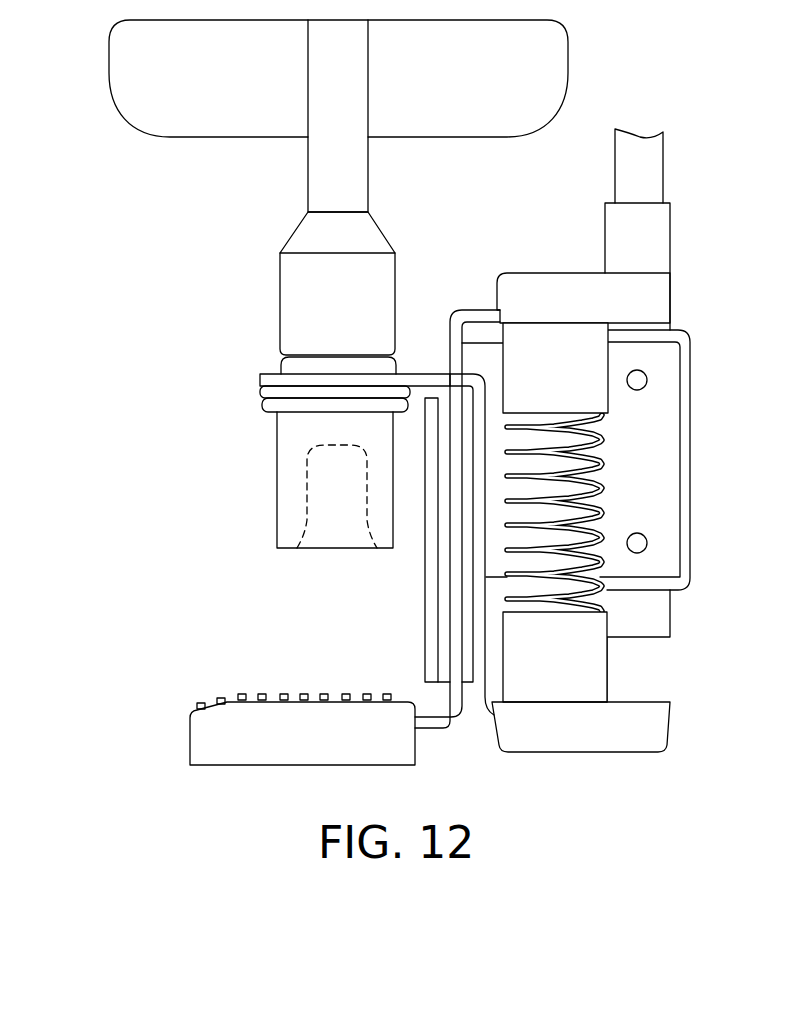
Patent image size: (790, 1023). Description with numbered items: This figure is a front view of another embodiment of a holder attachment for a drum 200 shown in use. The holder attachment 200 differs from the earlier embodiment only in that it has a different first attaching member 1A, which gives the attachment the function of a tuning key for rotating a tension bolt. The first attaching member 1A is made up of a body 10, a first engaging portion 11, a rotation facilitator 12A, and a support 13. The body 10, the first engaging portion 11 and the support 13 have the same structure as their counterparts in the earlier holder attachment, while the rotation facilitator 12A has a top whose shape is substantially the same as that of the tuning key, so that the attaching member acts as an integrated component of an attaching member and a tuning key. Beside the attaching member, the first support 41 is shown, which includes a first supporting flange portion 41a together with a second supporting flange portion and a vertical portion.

The first attaching member 1A is at (112, 177).
The rotation facilitator 12A is at (300, 283).
The support 13 is at (287, 368).
The body 10 is at (277, 445).
The first engaging portion 11 is at (318, 512).
The first supporting flange portion 41a is at (415, 374).
The first support 41 is at (474, 473).
The holder attachment for a drum 200 is at (147, 625).